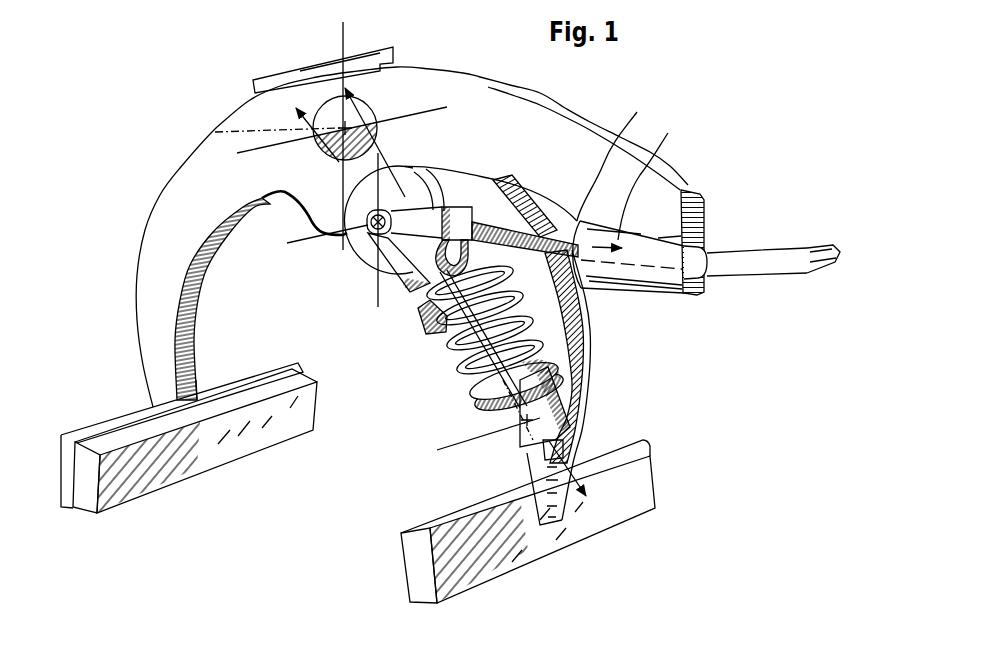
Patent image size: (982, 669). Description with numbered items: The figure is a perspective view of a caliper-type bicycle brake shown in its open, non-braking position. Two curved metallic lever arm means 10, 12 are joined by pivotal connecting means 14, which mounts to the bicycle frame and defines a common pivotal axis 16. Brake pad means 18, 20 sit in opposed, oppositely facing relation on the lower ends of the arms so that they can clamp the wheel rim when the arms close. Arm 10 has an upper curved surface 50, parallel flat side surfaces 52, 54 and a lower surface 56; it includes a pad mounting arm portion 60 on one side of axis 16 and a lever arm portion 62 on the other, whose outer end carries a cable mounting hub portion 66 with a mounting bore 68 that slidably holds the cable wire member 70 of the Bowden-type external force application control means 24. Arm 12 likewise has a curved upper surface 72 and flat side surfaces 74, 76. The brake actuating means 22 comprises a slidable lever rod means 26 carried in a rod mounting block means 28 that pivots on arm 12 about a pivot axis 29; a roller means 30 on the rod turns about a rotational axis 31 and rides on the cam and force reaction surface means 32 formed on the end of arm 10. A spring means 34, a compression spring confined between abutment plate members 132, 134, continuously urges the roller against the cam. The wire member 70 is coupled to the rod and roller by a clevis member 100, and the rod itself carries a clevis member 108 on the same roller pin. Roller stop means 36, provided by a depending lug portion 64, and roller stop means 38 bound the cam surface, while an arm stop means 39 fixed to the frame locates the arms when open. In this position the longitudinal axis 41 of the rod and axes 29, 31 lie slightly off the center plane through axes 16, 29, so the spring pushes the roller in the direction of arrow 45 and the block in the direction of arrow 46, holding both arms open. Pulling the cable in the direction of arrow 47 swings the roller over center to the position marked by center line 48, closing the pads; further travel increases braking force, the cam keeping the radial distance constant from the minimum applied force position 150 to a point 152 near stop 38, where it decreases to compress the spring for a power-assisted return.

The lever arm means 10 is at (372, 220).
The lever arm means 12 is at (583, 387).
The pivotal connecting means 14 is at (387, 104).
The pivotal axis 16 is at (407, 115).
The brake pad means 18 is at (92, 518).
The brake pad means 20 is at (392, 541).
The brake actuating means 22 is at (414, 330).
The external force application control means 24 is at (735, 247).
The slidable lever rod means 26 is at (469, 337).
The rod mounting block means 28 is at (516, 456).
The pivot axis 29 is at (470, 440).
The roller means 30 is at (367, 251).
The rotational axis 31 is at (328, 246).
The cam and force reaction surface means 32 is at (457, 180).
The spring means 34 is at (455, 360).
The roller stop means 36 is at (343, 212).
The roller stop means 38 is at (655, 176).
The arm stop means 39 is at (246, 79).
The longitudinal axis 41 is at (215, 132).
The arrow 45 is at (287, 113).
The arrow 46 is at (591, 493).
The arrow 47 is at (684, 188).
The center line 48 is at (370, 118).
The upper curved surface 50 is at (566, 112).
The flat side surface 52 is at (150, 383).
The flat side surface 54 is at (197, 327).
The lower surface 56 is at (196, 368).
The pad mounting arm portion 60 is at (146, 207).
The lever arm portion 62 is at (492, 79).
The depending lug portion 64 is at (323, 220).
The cable mounting hub portion 66 is at (654, 246).
The mounting bore 68 is at (702, 293).
The cable wire member 70 is at (547, 194).
The curved upper surface 72 is at (590, 361).
The flat side surface 74 is at (547, 328).
The flat side surface 76 is at (597, 383).
The clevis member 100 is at (510, 181).
The clevis member 108 is at (403, 300).
The abutment plate member 132 is at (428, 340).
The abutment plate member 134 is at (471, 408).
The initial minimum applied force position 150 is at (398, 173).
The point adjacent the stop means 152 is at (620, 156).